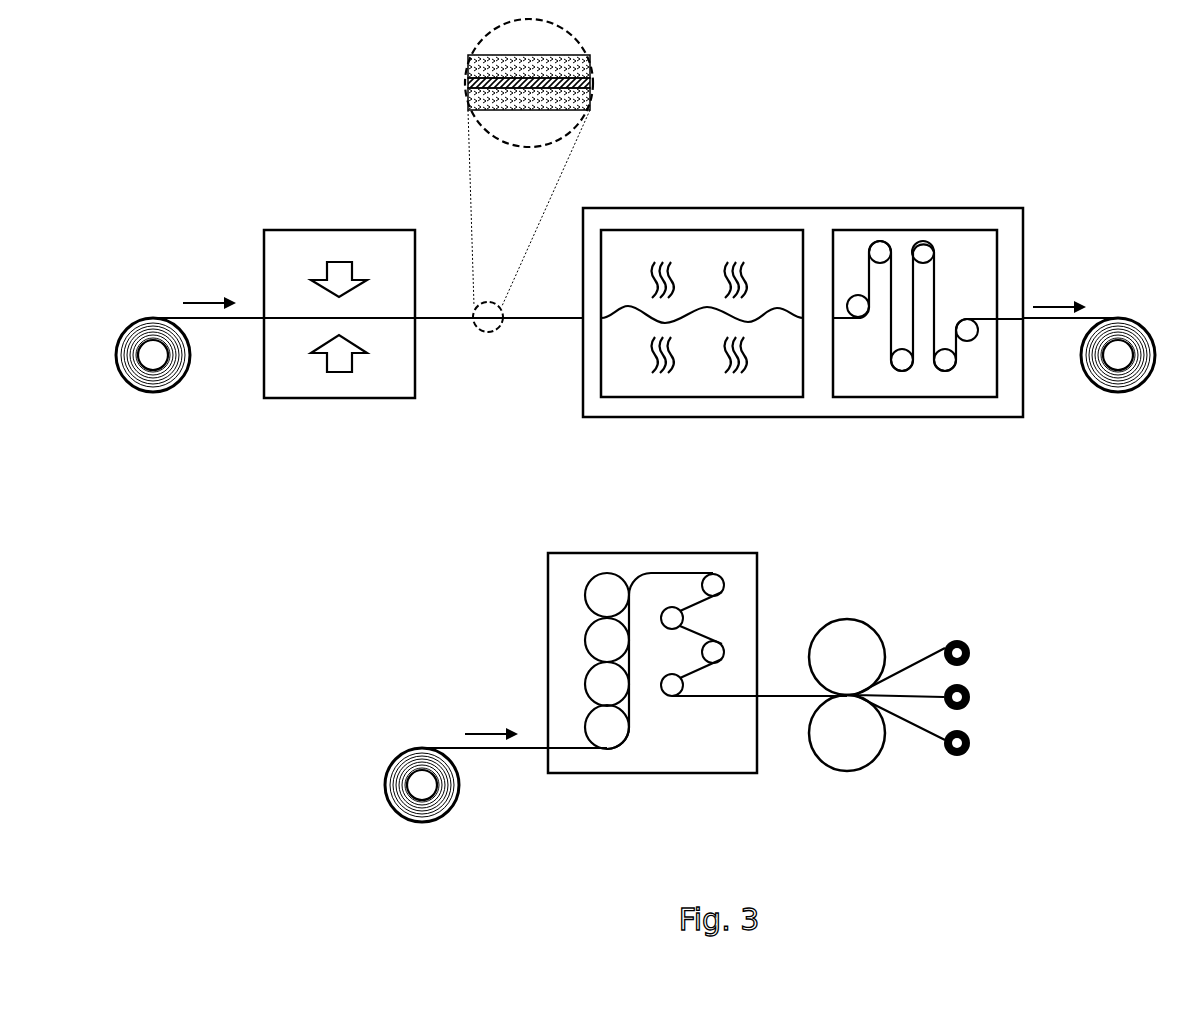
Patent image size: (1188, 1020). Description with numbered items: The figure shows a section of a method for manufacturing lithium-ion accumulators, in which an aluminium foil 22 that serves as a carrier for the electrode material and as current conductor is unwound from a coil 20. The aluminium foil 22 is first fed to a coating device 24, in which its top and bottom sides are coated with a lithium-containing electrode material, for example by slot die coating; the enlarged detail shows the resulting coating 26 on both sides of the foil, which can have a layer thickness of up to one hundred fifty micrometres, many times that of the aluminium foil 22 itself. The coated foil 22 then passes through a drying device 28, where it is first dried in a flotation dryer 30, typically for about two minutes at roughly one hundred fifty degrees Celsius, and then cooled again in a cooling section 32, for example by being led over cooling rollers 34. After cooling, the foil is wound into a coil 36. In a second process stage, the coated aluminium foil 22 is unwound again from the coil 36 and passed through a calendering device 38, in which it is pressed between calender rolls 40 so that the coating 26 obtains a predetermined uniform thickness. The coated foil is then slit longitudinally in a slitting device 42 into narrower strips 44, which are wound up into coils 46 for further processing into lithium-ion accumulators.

The coil 20 is at (140, 388).
The aluminium foil 22 is at (238, 322).
The coating device 24 is at (358, 228).
The coating 26 is at (592, 66).
The drying device 28 is at (771, 206).
The flotation dryer 30 is at (693, 228).
The cooling section 32 is at (895, 228).
The cooling rollers 34 is at (922, 243).
The coil 36 is at (1104, 392).
The calendering device 38 is at (677, 551).
The calender rolls 40 is at (601, 592).
The slitting device 42 is at (850, 620).
The strips 44 is at (921, 655).
The coils 46 is at (957, 637).